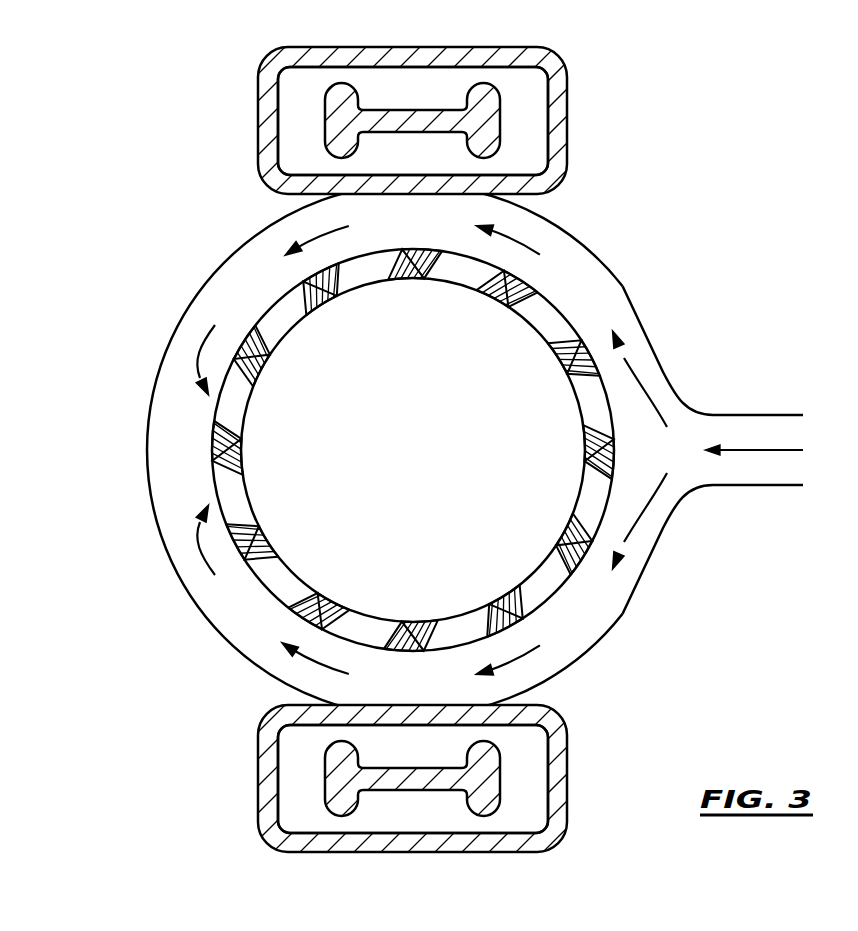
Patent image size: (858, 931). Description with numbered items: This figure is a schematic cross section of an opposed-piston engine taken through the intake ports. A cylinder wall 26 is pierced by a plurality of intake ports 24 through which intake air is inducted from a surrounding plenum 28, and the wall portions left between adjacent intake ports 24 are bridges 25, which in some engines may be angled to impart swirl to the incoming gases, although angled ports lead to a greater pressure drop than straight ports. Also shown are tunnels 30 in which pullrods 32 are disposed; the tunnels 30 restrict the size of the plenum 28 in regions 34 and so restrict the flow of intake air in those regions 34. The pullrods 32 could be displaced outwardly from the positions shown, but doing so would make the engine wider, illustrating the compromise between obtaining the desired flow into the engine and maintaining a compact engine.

The intake ports 24 is at (382, 492).
The bridges 25 is at (617, 457).
The cylinder wall 26 is at (232, 543).
The plenum 28 is at (173, 440).
The tunnels 30 is at (568, 92).
The pullrods 32 is at (502, 128).
The regions 34 is at (445, 212).